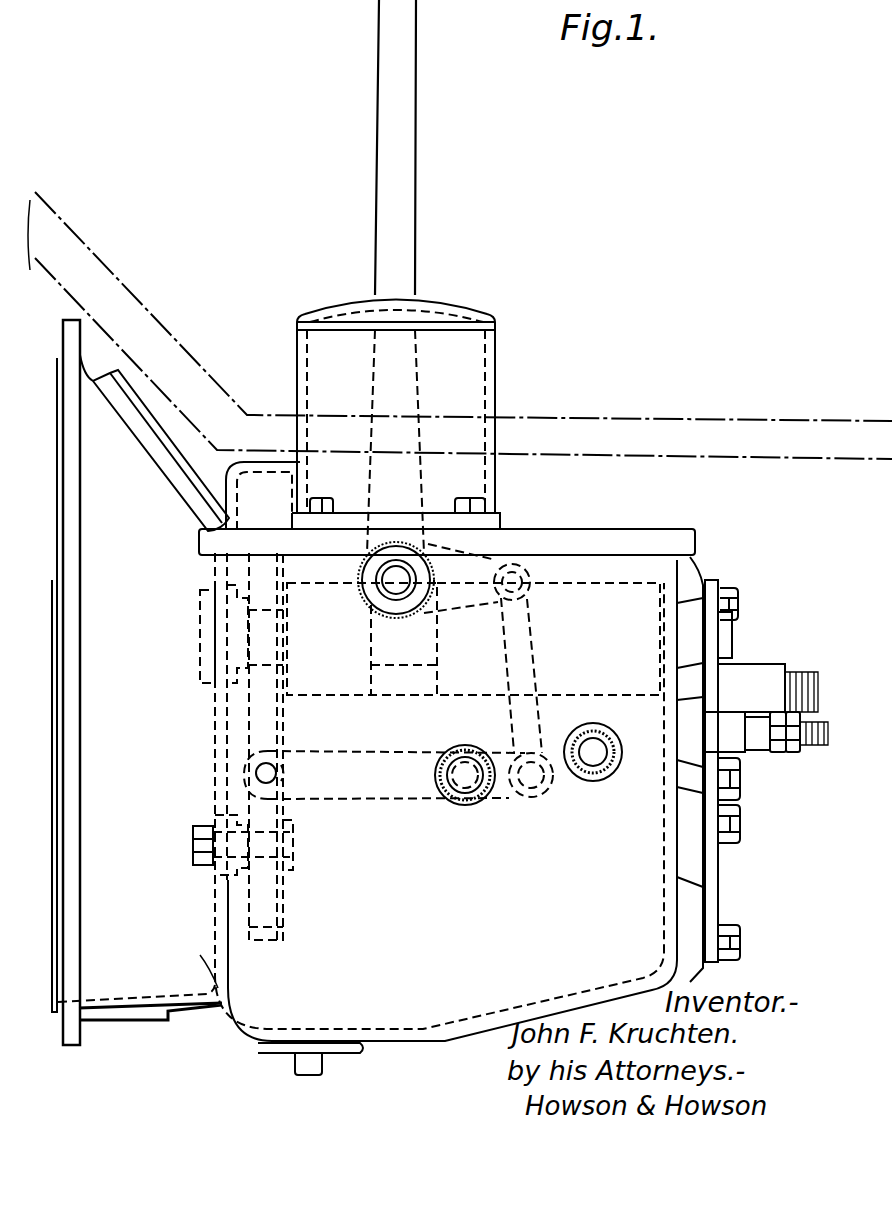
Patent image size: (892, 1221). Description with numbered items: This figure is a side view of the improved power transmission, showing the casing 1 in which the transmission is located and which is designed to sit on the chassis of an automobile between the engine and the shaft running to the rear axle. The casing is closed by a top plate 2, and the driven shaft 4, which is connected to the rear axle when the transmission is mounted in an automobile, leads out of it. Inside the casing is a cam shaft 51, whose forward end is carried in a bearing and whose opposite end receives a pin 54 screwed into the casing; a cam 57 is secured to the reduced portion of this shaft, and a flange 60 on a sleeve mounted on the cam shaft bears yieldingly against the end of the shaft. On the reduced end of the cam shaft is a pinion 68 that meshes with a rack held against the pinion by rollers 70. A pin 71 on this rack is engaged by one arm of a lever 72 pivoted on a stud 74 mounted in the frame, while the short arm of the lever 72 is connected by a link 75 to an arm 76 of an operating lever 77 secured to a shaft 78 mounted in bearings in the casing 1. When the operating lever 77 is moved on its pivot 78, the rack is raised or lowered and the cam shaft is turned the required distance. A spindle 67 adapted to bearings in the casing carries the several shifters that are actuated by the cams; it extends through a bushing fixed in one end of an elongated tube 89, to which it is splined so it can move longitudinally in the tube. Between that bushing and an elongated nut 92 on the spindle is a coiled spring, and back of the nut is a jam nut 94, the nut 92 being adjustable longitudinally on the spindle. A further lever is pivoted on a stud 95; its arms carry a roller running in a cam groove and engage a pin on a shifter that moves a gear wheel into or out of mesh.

The casing 1 is at (240, 993).
The top plate 2 is at (574, 534).
The driven shaft 4 is at (745, 673).
The cam shaft 51 is at (584, 595).
The pin 54 is at (734, 634).
The cam 57 is at (376, 694).
The flange 60 is at (284, 724).
The spindle 67 is at (830, 733).
The pinion 68 is at (262, 610).
The rollers 70 is at (292, 850).
The pin 71 is at (280, 775).
The lever 72 is at (388, 751).
The stud 74 is at (465, 790).
The link 75 is at (535, 643).
The arm 76 is at (466, 609).
The operating lever 77 is at (404, 139).
The shaft 78 is at (392, 579).
The elongated tube 89 is at (740, 758).
The elongated nut 92 is at (758, 718).
The jam nut 94 is at (787, 752).
The stud 95 is at (592, 760).